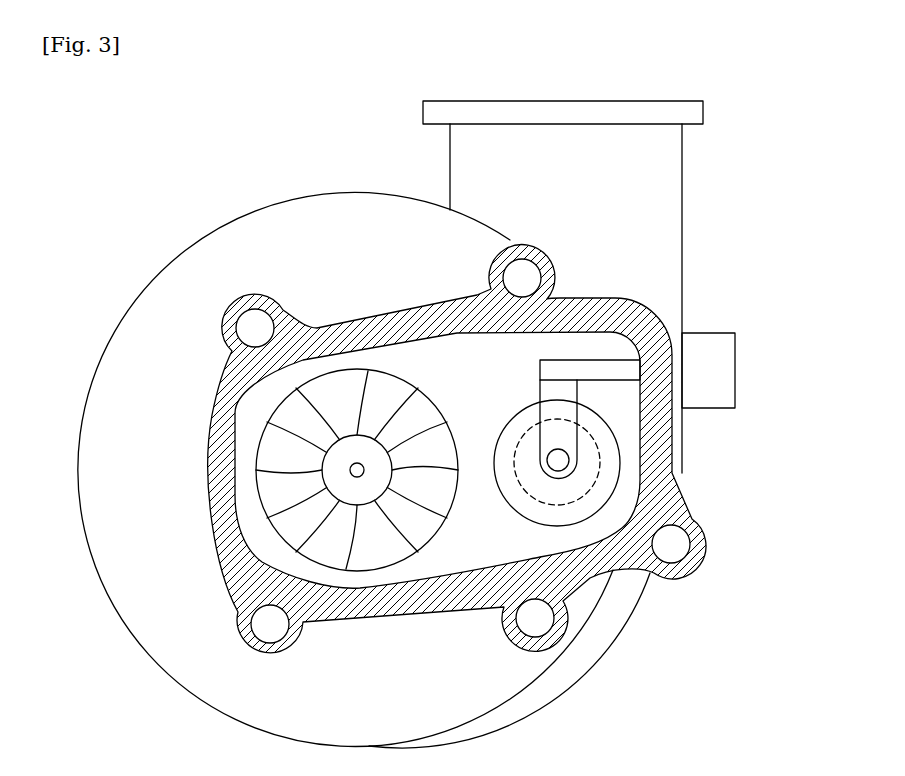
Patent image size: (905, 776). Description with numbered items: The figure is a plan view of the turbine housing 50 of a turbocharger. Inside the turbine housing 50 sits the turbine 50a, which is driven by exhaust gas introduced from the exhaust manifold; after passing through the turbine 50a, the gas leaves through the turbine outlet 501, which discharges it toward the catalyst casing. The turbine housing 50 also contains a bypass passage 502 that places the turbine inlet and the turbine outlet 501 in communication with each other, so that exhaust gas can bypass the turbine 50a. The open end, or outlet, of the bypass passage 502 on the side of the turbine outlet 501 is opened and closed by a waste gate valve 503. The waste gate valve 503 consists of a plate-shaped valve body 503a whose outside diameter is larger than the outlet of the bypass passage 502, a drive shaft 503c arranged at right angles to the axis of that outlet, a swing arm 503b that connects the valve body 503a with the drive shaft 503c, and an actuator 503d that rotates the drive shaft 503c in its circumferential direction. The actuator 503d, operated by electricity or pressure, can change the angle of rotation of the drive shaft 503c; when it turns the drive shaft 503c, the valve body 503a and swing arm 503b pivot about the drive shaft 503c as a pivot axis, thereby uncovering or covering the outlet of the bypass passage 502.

The turbine housing 50 is at (122, 306).
The turbine 50a is at (280, 503).
The turbine outlet 501 is at (425, 358).
The bypass passage 502 is at (523, 485).
The waste gate valve 503 is at (518, 350).
The valve body 503a is at (582, 515).
The swing arm 503b is at (568, 430).
The drive shaft 503c is at (598, 365).
The actuator 503d is at (737, 358).